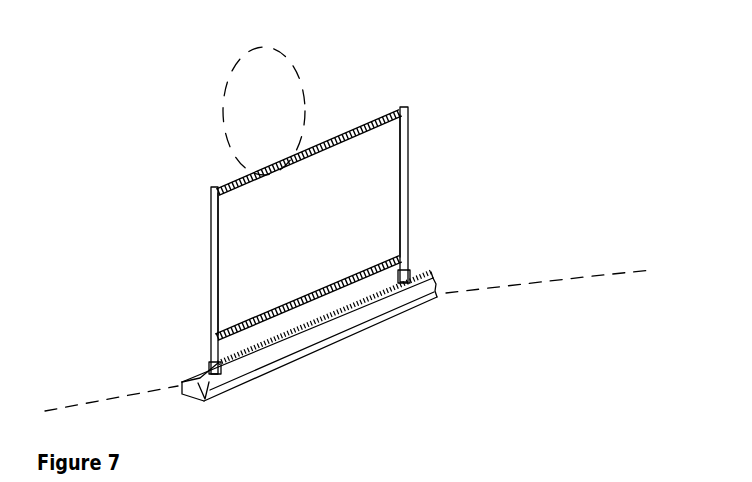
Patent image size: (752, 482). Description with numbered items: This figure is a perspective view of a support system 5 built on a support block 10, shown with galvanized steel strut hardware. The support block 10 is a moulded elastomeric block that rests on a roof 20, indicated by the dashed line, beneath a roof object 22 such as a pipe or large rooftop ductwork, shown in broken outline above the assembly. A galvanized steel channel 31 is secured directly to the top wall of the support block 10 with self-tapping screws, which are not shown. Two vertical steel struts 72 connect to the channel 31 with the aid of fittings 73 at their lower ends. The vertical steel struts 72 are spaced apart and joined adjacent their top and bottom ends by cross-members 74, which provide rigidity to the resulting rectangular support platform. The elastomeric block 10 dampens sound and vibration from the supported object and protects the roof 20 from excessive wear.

The support system 5 is at (200, 152).
The support block 10 is at (333, 333).
The roof 20 is at (586, 280).
The roof object 22 is at (296, 92).
The galvanized steel channel 31 is at (403, 310).
The vertical steel struts 72 is at (210, 282).
The fittings 73 is at (210, 364).
The cross-members 74 is at (307, 153).